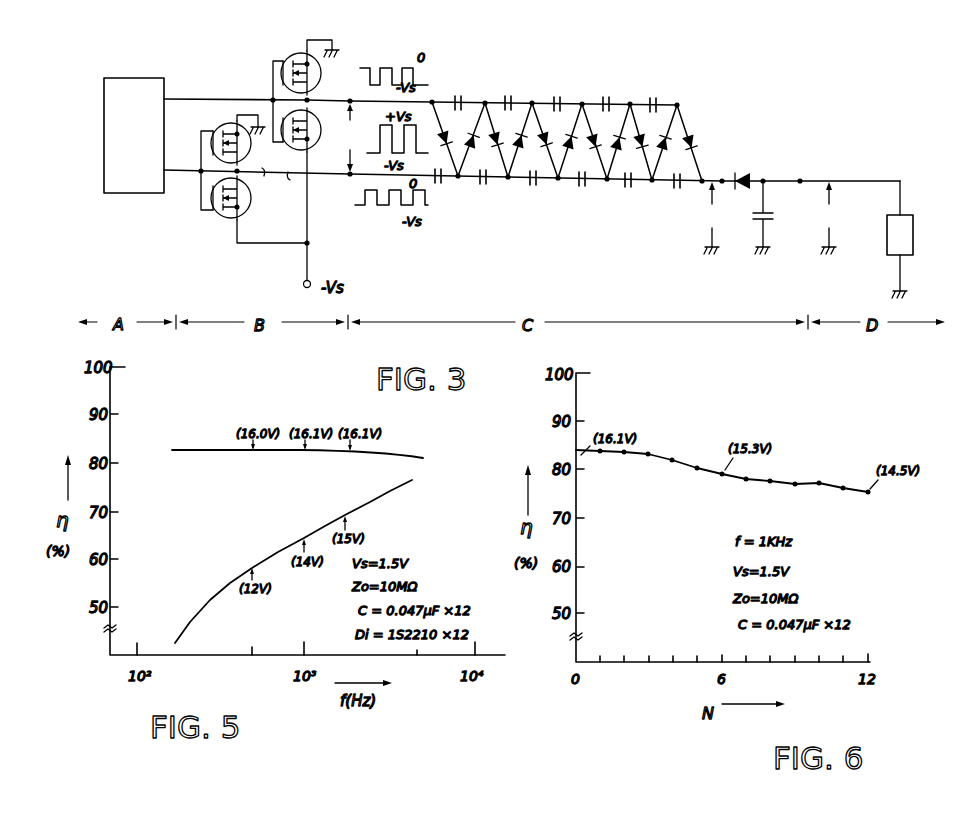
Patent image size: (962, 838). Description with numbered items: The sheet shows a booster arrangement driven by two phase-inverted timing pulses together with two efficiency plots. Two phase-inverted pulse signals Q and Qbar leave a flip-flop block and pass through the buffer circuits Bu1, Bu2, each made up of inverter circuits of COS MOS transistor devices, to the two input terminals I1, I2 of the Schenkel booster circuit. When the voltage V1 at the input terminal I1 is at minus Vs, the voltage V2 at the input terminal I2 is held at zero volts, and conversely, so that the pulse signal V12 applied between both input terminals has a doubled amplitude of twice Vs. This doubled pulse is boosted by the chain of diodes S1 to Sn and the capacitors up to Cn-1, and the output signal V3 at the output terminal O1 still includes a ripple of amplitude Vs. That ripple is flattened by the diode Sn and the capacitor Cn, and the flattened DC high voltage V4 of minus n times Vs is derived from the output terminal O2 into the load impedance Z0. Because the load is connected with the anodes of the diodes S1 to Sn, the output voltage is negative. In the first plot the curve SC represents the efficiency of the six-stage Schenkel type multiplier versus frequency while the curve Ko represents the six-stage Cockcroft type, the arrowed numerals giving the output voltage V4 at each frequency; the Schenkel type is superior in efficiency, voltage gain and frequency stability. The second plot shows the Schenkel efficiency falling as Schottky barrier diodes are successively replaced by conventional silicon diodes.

In FIG. 3, the pulse signal Q is at (420, 90).
In FIG. 3, the phase-inverted pulse signal Qbar is at (182, 179).
In FIG. 3, the buffer circuit Bu1 is at (304, 84).
In FIG. 3, the buffer circuit Bu2 is at (251, 184).
In FIG. 3, the voltage V1 is at (339, 114).
In FIG. 3, the voltage V2 is at (265, 163).
In FIG. 3, the pulse signal voltage between input terminals V12 is at (357, 155).
In FIG. 3, the input terminal I1 is at (344, 91).
In FIG. 3, the input terminal I2 is at (309, 190).
In FIG. 3, the diode S1 is at (695, 141).
In FIG. 3, the diode Sn is at (746, 176).
In FIG. 3, the capacitor Cn-1 is at (674, 189).
In FIG. 3, the capacitor Cn is at (777, 216).
In FIG. 3, the output terminal O1 is at (723, 177).
In FIG. 3, the output terminal O2 is at (801, 177).
In FIG. 3, the output signal V3 is at (712, 218).
In FIG. 3, the output voltage V4 is at (829, 218).
In FIG. 3, the load impedance Z0 is at (900, 239).
In FIG. 5, the curve SC is at (413, 457).
In FIG. 5, the curve Ko is at (405, 482).